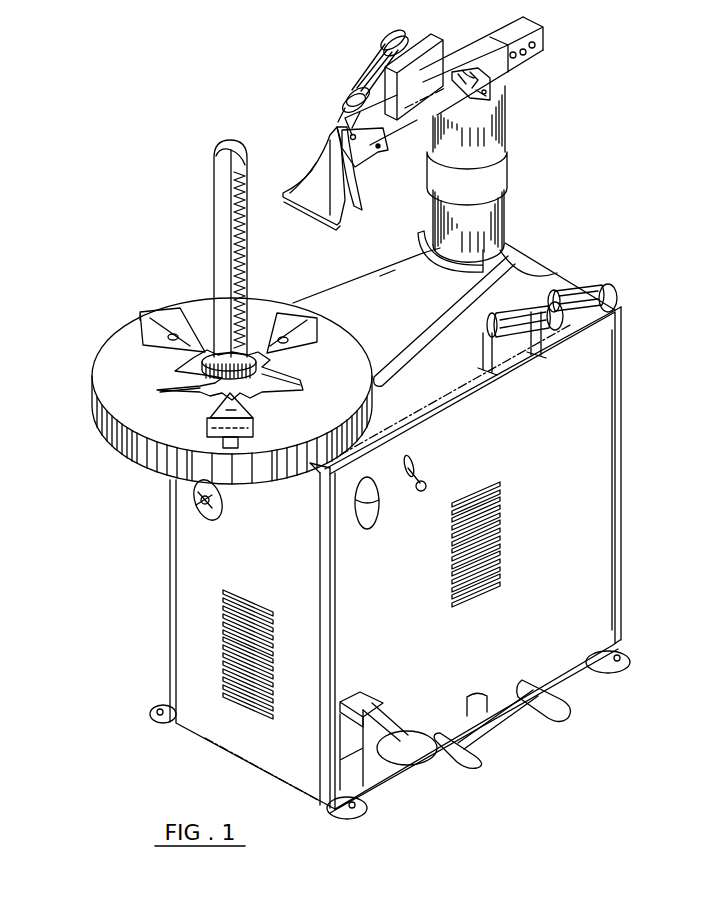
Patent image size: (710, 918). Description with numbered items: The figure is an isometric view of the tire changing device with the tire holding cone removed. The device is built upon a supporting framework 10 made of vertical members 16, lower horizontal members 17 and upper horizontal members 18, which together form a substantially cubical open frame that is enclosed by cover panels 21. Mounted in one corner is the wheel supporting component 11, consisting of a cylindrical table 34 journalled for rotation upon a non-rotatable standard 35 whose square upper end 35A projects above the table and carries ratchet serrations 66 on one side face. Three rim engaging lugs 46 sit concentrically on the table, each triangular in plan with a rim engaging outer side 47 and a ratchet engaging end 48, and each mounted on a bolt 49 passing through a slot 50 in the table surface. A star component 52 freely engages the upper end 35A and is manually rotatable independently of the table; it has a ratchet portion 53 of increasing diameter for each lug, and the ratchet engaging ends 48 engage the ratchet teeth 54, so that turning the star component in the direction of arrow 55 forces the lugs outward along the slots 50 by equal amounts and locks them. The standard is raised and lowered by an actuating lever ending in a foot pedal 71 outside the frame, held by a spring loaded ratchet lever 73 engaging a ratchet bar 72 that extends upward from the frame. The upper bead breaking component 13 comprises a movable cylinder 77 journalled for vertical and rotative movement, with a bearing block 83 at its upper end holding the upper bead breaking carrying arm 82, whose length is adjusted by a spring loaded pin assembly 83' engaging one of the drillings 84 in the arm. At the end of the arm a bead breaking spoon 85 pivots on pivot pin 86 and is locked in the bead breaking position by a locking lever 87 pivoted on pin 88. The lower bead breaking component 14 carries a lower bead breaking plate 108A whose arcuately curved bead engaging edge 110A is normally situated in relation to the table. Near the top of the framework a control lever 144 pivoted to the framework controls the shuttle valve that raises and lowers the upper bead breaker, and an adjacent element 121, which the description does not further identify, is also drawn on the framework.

The supporting framework 10 is at (628, 509).
The wheel supporting component 11 is at (114, 447).
The upper bead breaking component 13 is at (507, 209).
The lower bead breaking component 14 is at (352, 237).
The vertical members 16 is at (620, 428).
The lower horizontal members 17 is at (557, 673).
The upper horizontal members 18 is at (446, 416).
The cover panels 21 is at (624, 535).
The cylindrical table 34 is at (150, 455).
The non-rotatable standard 35 is at (213, 288).
The upper end of the standard 35A is at (230, 170).
The rim engaging lugs 46 is at (148, 288).
The rim engaging outer side 47 is at (254, 428).
The ratchet engaging end 48 is at (216, 403).
The bolt 49 is at (256, 291).
The slot 50 is at (242, 447).
The star component 52 is at (300, 367).
The ratchet portion 53 is at (286, 374).
The ratchet teeth 54 is at (304, 393).
The arrow 55 is at (143, 412).
The ratchet serrations 66 is at (248, 245).
The foot pedal 71 is at (418, 765).
The ratchet bar 72 is at (379, 788).
The spring loaded ratchet lever 73 is at (372, 694).
The movable cylinder 77 is at (490, 127).
The upper bead breaking carrying arm 82 is at (366, 91).
The bearing block 83 is at (474, 66).
The spring loaded pin assembly 83' is at (521, 90).
The drillings 84 is at (540, 52).
The bead breaking spoon 85 is at (352, 200).
The pivot pin 86 is at (366, 148).
The pin 88 is at (372, 167).
The locking lever 87 is at (383, 57).
The lower bead breaking plate 108A is at (388, 288).
The bead engaging edge 110A is at (388, 382).
The handle post 121 is at (495, 358).
The control lever 144 is at (622, 302).